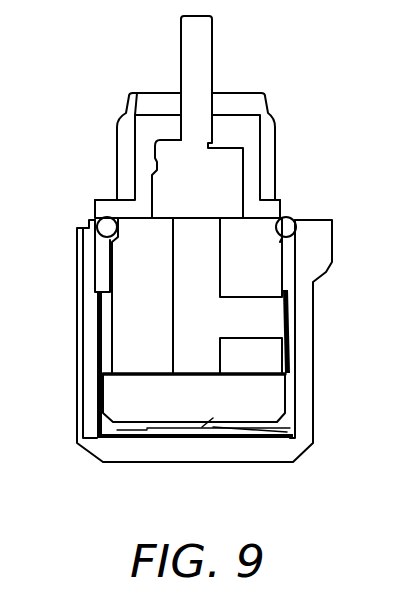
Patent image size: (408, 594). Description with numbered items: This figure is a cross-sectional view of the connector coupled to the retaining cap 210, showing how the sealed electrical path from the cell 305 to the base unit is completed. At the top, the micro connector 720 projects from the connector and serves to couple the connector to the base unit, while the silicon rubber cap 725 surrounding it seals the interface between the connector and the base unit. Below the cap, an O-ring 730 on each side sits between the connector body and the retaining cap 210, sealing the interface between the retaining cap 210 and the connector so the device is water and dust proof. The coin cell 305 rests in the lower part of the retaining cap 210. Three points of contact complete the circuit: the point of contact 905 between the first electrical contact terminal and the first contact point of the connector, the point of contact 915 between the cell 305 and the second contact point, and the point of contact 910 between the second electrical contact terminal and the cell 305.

The micro connector 720 is at (214, 50).
The silicon rubber cap 725 is at (277, 141).
The O-ring 730 is at (288, 218).
The retaining cap 210 is at (315, 277).
The point of contact 905 is at (289, 317).
The point of contact 915 is at (197, 372).
The cell 305 is at (110, 400).
The point of contact 910 is at (213, 427).